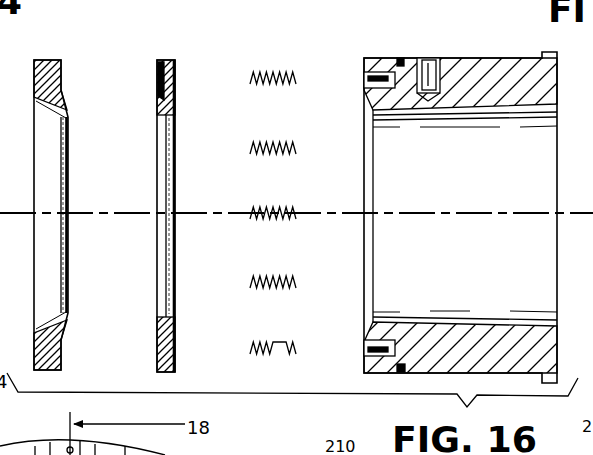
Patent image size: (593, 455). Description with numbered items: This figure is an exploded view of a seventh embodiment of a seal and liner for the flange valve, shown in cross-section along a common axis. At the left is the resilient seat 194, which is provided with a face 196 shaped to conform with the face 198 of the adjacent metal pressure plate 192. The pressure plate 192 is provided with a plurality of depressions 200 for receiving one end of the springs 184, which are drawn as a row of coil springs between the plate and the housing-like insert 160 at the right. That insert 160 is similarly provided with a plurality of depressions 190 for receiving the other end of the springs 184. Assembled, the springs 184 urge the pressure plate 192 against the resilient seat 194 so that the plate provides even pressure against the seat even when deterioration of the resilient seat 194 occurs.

The housing 160 is at (456, 192).
The springs 184 is at (284, 62).
The depressions 190 is at (373, 75).
The metal pressure plate 192 is at (190, 189).
The resilient seat 194 is at (79, 193).
The face 196 is at (60, 80).
The face 198 is at (166, 77).
The depressions 200 is at (172, 78).